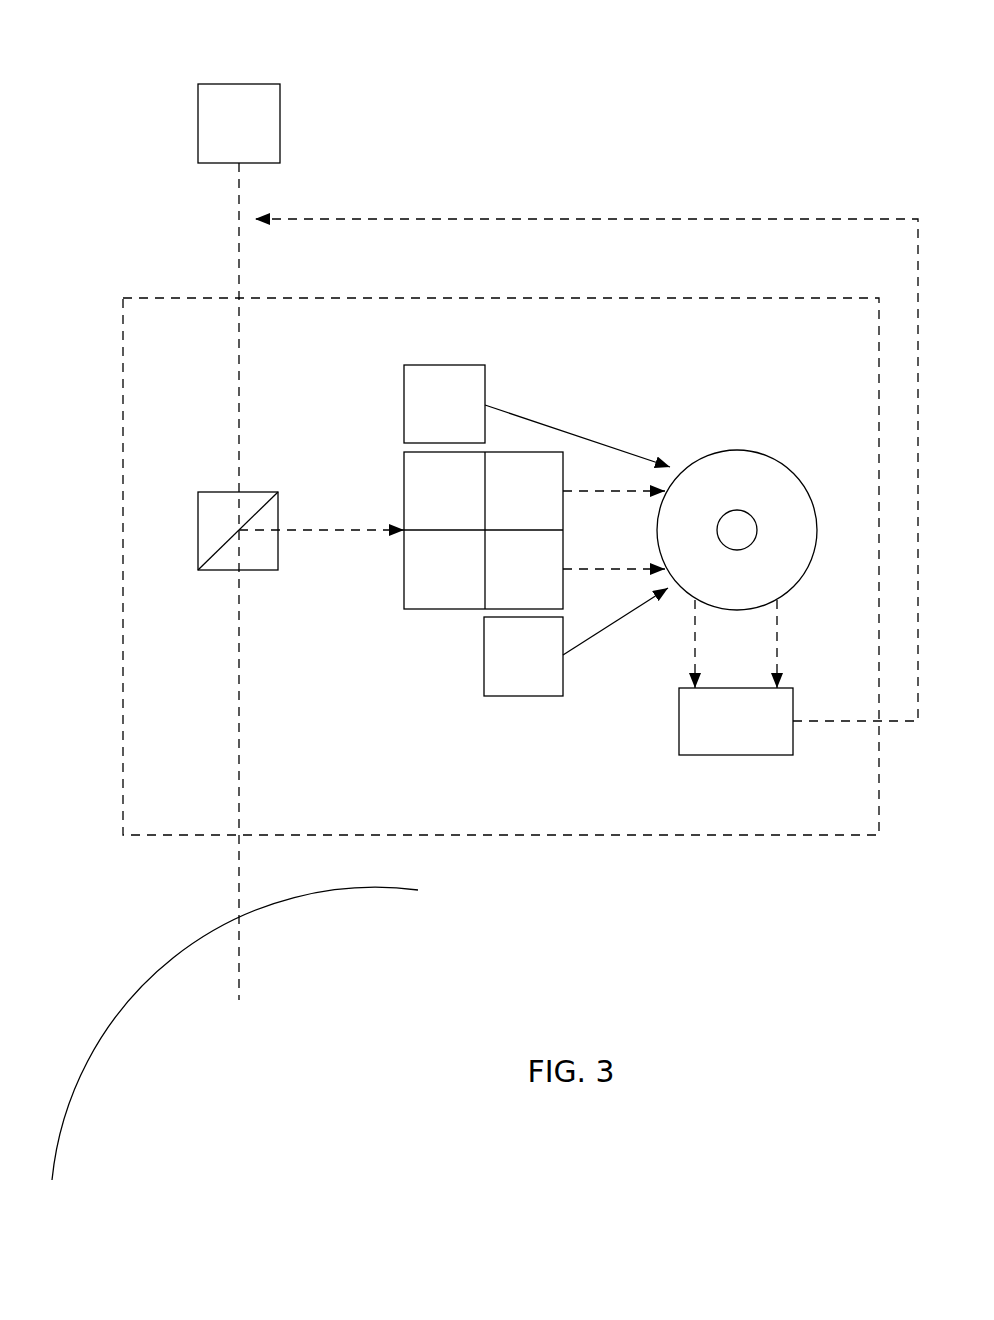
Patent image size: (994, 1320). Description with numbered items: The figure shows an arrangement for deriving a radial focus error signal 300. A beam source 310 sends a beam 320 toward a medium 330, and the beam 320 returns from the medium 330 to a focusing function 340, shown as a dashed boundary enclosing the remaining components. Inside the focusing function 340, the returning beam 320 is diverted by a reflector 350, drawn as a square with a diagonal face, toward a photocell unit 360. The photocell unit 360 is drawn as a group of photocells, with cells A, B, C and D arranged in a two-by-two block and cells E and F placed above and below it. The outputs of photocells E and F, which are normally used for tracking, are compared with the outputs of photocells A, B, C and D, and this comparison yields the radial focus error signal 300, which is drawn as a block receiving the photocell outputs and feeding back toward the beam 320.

The radial focus error signal 300 is at (678, 722).
The beam source 310 is at (239, 84).
The beam 320 is at (239, 254).
The medium 330 is at (142, 1020).
The focusing function 340 is at (293, 297).
The reflector 350 is at (280, 556).
The photocell unit 360 is at (403, 467).